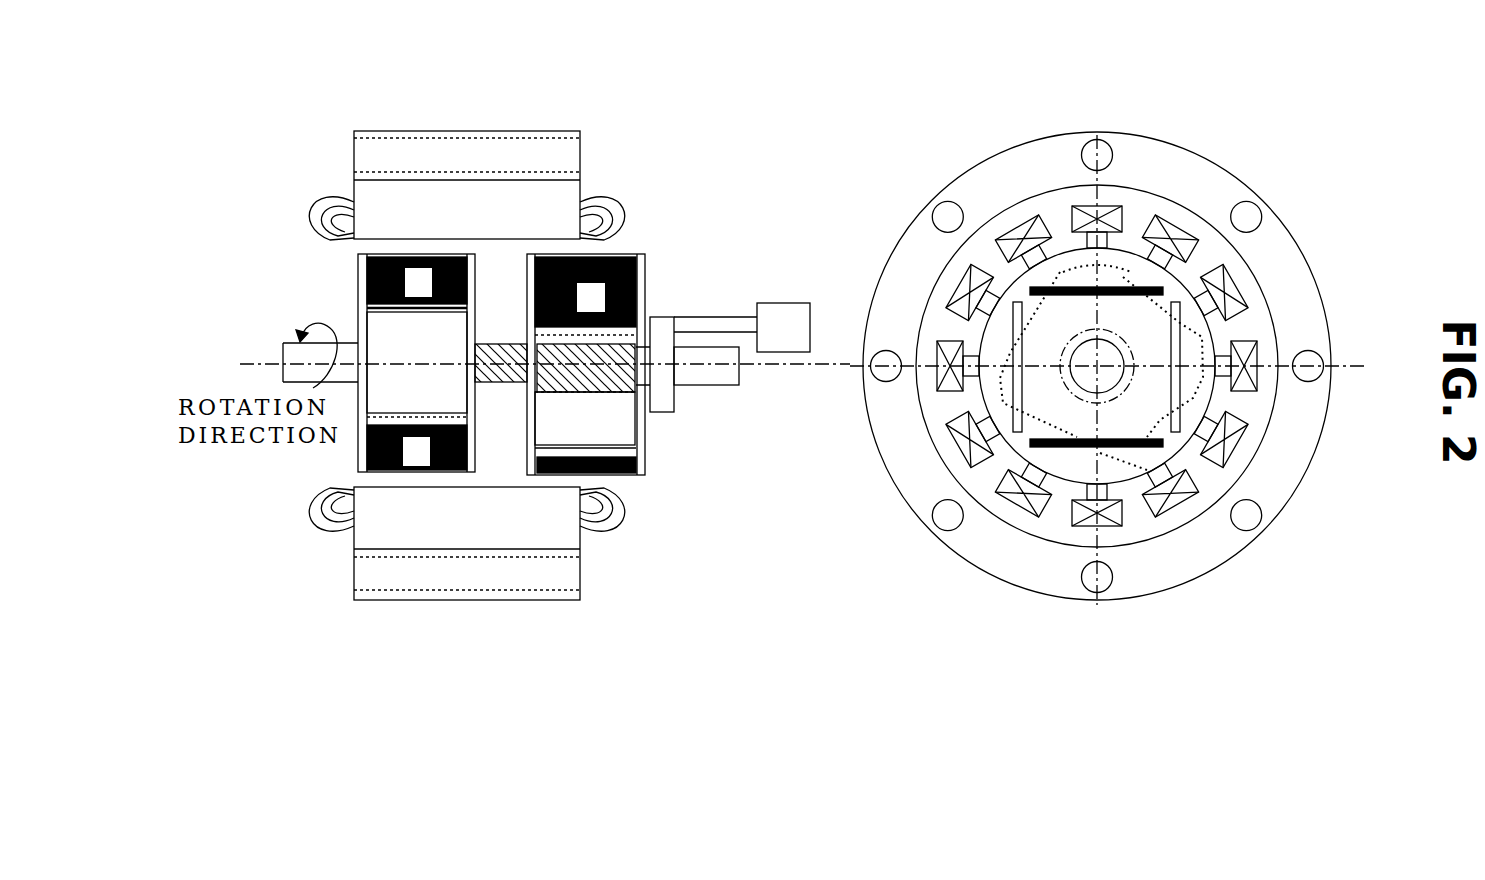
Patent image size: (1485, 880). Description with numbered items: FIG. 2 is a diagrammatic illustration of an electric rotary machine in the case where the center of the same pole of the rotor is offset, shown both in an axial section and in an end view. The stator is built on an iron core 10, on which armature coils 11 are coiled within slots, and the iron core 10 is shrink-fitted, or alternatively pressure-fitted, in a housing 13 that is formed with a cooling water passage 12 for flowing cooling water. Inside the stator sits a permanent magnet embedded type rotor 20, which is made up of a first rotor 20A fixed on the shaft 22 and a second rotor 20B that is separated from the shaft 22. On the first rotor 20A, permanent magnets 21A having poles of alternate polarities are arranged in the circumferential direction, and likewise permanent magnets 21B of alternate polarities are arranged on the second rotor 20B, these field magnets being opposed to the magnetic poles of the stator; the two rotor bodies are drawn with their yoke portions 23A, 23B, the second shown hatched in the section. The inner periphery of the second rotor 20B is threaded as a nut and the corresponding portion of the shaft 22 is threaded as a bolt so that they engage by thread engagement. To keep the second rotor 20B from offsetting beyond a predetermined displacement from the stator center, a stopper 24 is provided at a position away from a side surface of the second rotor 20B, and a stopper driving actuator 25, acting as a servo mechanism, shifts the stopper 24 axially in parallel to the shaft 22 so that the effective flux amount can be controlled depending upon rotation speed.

The iron core 10 is at (377, 177).
The armature coils 11 is at (307, 193).
The cooling water passage 12 is at (423, 138).
The housing 13 is at (542, 132).
The permanent magnet embedded type rotor 20 is at (1195, 272).
The first rotor 20A is at (362, 462).
The second rotor 20B is at (531, 460).
The permanent magnets 21A is at (448, 395).
The permanent magnets 21B is at (615, 420).
The shaft 22 is at (705, 385).
The first rotor yoke 23A is at (507, 343).
The second rotor yoke 23B is at (617, 393).
The stopper 24 is at (663, 317).
The stopper driving actuator 25 is at (777, 303).